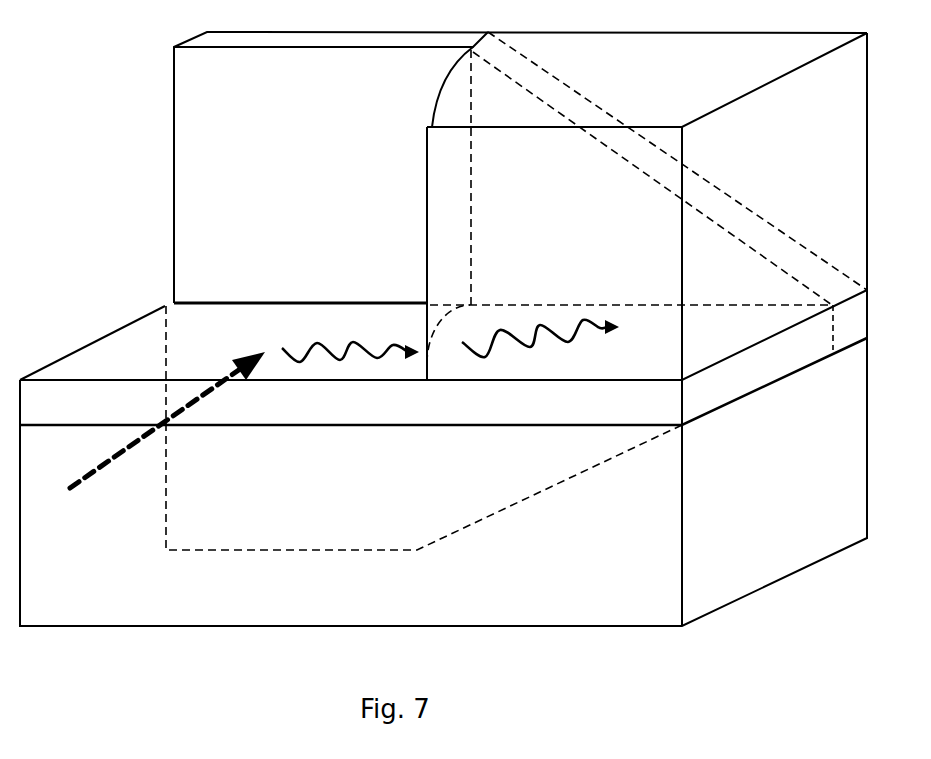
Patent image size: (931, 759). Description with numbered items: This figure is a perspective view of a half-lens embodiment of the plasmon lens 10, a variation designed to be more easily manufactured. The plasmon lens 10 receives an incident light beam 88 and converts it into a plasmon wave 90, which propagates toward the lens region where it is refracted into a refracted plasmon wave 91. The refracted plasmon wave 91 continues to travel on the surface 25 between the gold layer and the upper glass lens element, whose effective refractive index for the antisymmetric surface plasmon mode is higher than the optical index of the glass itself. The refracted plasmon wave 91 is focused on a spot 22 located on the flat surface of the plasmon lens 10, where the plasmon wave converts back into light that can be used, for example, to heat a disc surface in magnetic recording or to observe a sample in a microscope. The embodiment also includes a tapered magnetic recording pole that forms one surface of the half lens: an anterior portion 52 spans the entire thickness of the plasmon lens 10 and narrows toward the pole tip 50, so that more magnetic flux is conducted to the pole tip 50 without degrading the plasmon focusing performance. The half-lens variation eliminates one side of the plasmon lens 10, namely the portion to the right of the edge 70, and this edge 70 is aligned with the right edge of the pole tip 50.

The plasmon lens 10 is at (778, 590).
The spot 22 is at (213, 323).
The surface 25 is at (480, 313).
The pole tip 50 is at (852, 322).
The anterior portion 52 is at (248, 72).
The edge 70 is at (868, 125).
The incident light beam 88 is at (152, 432).
The plasmon wave 90 is at (350, 340).
The refracted plasmon wave 91 is at (540, 325).